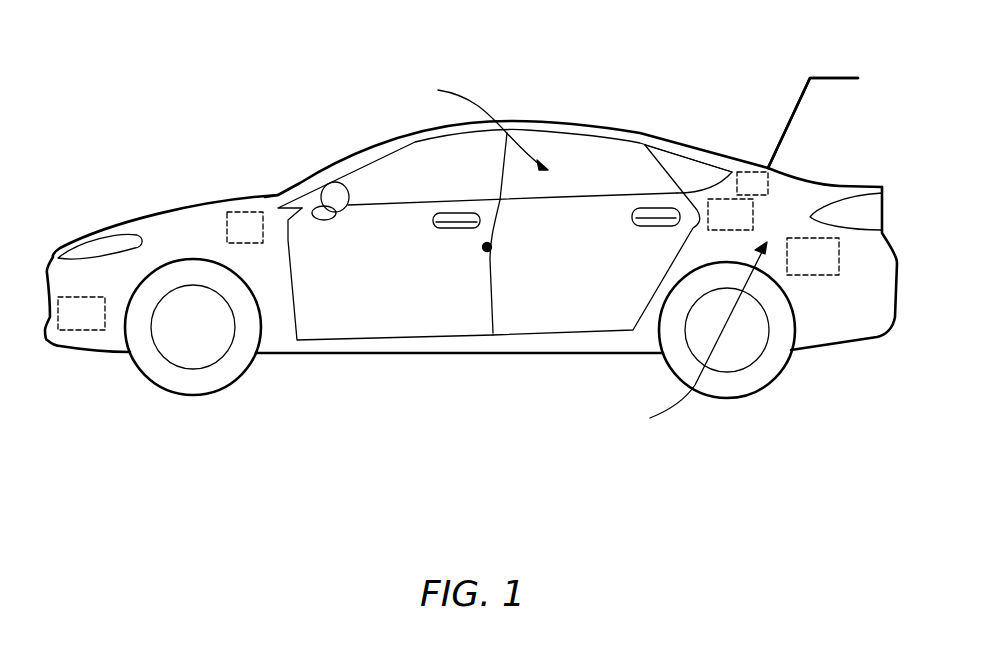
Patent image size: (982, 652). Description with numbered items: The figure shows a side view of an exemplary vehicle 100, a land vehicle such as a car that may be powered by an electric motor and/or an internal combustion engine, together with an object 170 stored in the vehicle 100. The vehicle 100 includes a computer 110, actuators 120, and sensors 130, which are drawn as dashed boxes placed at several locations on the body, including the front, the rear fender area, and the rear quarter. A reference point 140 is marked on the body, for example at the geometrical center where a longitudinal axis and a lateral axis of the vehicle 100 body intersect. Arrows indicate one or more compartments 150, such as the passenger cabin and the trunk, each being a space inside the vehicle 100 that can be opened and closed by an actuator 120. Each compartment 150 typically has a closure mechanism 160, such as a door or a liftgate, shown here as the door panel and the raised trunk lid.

The vehicle 100 is at (545, 122).
The computer 110 is at (238, 212).
The actuators 120 is at (748, 172).
The sensors 130 is at (83, 297).
The reference point 140 is at (487, 253).
The compartment 150 is at (583, 257).
The closure mechanism 160 is at (827, 78).
The object 170 is at (822, 277).